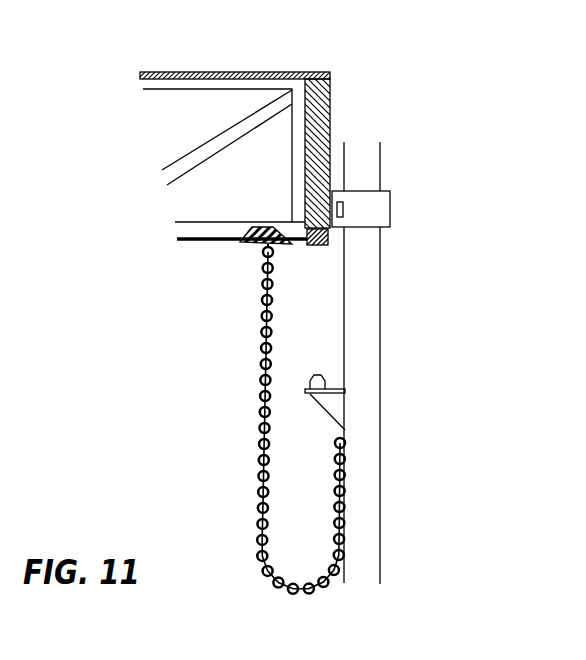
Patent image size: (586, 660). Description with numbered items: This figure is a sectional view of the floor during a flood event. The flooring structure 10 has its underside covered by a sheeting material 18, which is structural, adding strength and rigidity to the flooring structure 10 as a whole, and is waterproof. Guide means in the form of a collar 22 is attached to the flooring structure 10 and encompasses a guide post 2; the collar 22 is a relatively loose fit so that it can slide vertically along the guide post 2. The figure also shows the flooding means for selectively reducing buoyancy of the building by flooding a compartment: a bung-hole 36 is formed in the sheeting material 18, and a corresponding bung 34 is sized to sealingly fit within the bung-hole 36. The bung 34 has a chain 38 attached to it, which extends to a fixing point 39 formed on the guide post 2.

The flooring structure 10 is at (136, 172).
The sheeting material 18 is at (160, 242).
The bung-hole 36 is at (233, 246).
The bung 34 is at (250, 253).
The chain 38 is at (249, 442).
The fixing point 39 is at (358, 446).
The guide post 2 is at (393, 365).
The collar 22 is at (412, 203).